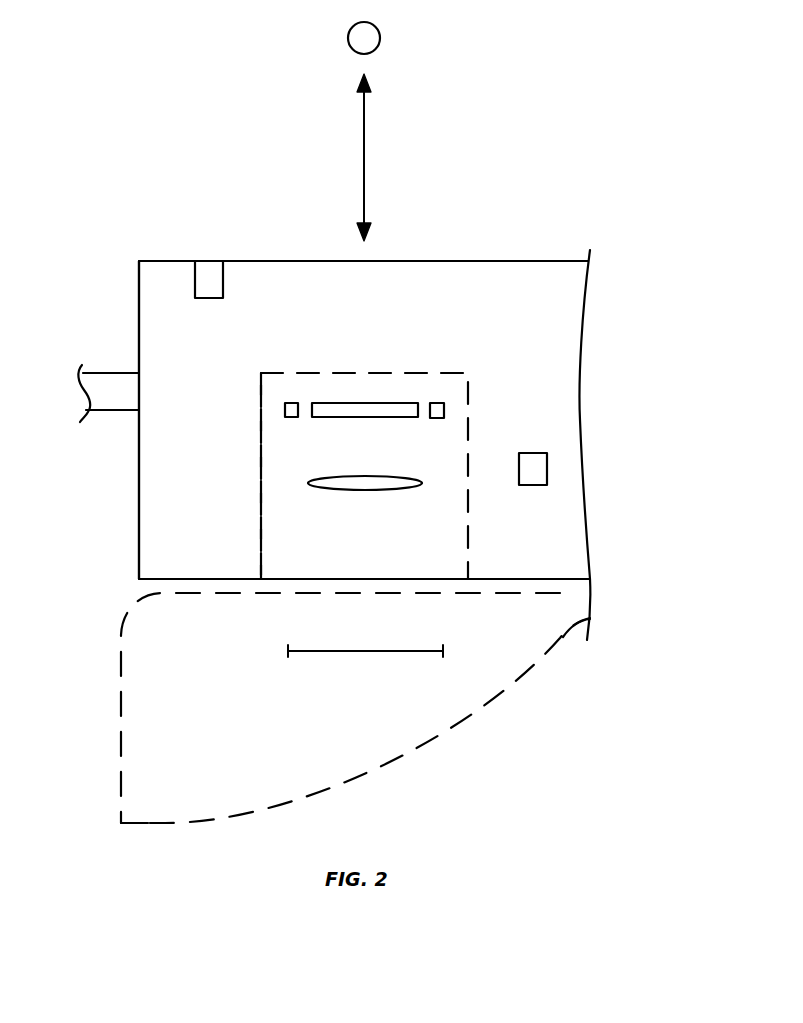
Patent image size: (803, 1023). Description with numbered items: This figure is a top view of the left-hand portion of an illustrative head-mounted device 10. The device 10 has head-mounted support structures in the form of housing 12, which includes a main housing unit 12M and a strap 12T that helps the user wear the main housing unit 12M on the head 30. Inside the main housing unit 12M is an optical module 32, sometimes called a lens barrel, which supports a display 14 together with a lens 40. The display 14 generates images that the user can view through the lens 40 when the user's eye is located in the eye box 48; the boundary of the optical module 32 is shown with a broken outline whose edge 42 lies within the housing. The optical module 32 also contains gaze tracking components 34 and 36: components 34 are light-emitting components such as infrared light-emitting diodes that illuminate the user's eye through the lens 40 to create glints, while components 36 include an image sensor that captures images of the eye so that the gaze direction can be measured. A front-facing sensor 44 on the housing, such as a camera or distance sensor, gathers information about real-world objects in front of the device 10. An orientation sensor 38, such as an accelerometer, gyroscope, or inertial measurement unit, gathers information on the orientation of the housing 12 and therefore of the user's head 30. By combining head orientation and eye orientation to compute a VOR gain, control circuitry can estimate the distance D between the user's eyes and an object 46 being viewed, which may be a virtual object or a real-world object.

The head-mounted device 10 is at (608, 107).
The head-mounted device housing 12 is at (545, 245).
The main housing unit 12M is at (139, 290).
The strap 12T is at (116, 412).
The display 14 is at (365, 410).
The head 30 is at (120, 711).
The optical module 32 is at (430, 373).
The light-emitting components 34 is at (285, 410).
The light sensing components 36 is at (444, 410).
The orientation sensor 38 is at (533, 485).
The lens 40 is at (365, 491).
The region edge 42 is at (261, 514).
The front-facing sensor 44 is at (209, 272).
The target object 46 is at (381, 36).
The eye box 48 is at (288, 651).
The distance D is at (371, 157).